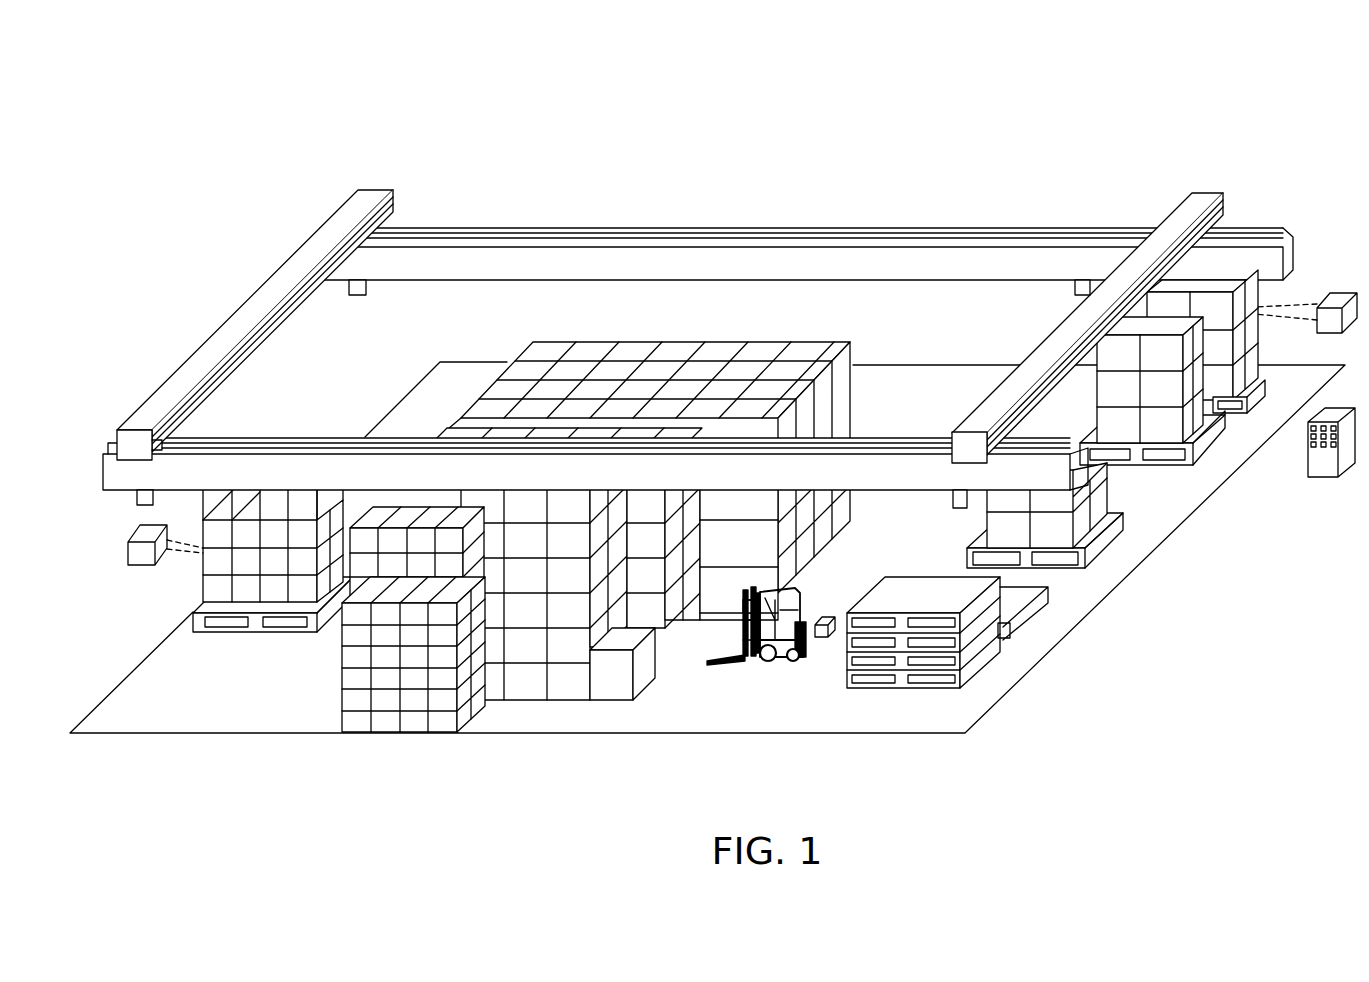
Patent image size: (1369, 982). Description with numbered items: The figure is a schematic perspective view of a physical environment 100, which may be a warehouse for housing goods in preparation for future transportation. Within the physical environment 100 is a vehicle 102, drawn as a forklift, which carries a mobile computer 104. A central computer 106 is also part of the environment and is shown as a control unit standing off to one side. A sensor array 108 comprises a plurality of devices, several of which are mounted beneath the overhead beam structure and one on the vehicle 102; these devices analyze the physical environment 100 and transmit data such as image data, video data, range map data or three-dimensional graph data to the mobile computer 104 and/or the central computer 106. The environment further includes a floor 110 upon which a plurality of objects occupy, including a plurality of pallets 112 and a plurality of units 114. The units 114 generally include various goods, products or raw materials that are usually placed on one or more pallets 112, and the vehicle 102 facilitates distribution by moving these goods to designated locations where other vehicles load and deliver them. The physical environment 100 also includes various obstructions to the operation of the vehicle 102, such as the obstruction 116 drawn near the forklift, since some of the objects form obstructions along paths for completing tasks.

The physical environment 100 is at (1055, 78).
The vehicle 102 is at (782, 640).
The mobile computer 104 is at (743, 627).
The central computer 106 is at (1323, 478).
The sensor array 108 is at (361, 297).
The floor 110 is at (272, 712).
The pallets 112 is at (1103, 542).
The units 114 is at (128, 550).
The obstruction 116 is at (819, 641).